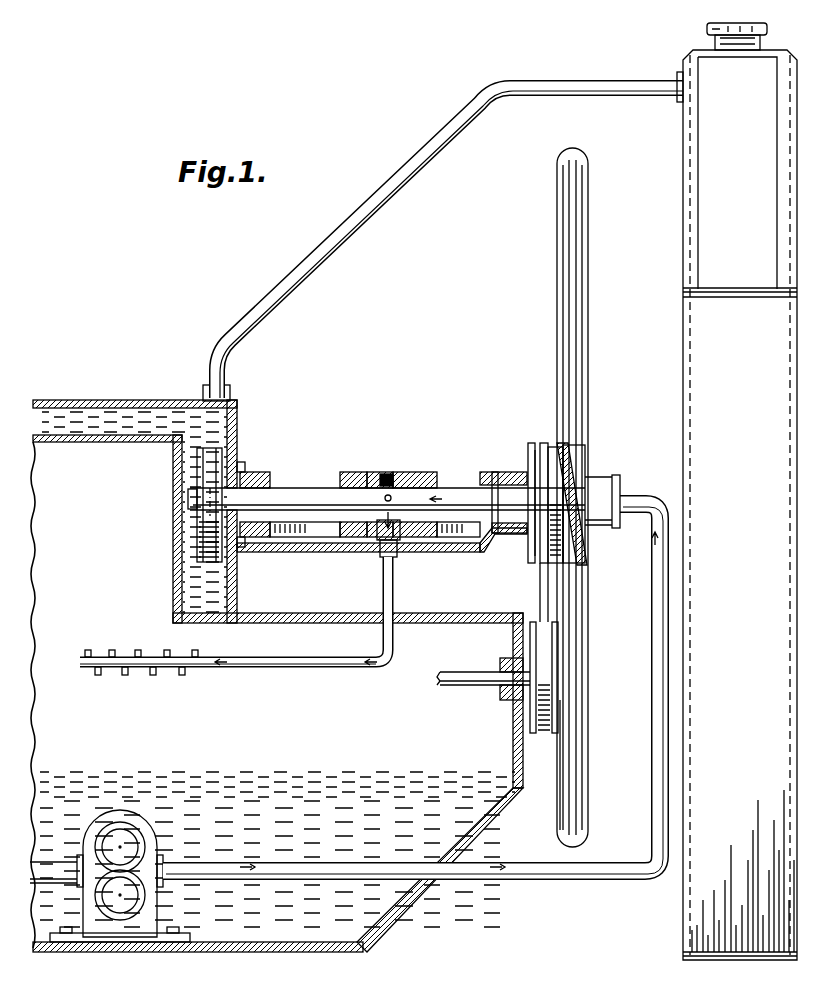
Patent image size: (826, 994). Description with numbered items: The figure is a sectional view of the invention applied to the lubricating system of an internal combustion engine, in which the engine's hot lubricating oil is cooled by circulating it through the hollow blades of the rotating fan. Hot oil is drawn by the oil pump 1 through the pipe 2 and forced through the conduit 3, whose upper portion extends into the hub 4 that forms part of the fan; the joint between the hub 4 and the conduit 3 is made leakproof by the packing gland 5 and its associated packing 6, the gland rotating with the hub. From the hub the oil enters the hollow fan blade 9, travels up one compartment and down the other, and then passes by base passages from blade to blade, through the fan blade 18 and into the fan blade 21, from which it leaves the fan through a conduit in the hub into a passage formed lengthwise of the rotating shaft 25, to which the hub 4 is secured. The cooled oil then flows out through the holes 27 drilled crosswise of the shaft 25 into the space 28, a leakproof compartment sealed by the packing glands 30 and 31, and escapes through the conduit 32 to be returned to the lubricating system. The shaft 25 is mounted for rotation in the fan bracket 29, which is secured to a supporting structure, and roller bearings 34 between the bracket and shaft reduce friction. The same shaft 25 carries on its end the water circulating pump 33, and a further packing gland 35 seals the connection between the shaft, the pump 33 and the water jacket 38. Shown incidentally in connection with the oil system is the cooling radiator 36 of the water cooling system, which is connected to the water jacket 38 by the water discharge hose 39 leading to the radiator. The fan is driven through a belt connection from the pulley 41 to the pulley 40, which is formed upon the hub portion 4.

The oil pump 1 is at (167, 850).
The pipe 2 is at (47, 880).
The conduit 3 is at (458, 880).
The hub 4 is at (584, 460).
The packing gland 5 is at (621, 478).
The packing 6 is at (603, 476).
The fan blade 9 is at (584, 331).
The fan blade 18 is at (586, 763).
The fan blade 21 is at (556, 442).
The rotating shaft 25 is at (308, 488).
The holes 27 is at (395, 472).
The space 28 is at (382, 545).
The fan bracket 29 is at (447, 559).
The packing gland 30 is at (438, 474).
The packing gland 31 is at (350, 472).
The conduit 32 is at (342, 665).
The water circulating pump 33 is at (205, 520).
The roller bearings 34 is at (500, 478).
The packing gland 35 is at (265, 472).
The cooling radiator 36 is at (740, 491).
The water jacket 38 is at (128, 412).
The water discharge hose 39 is at (349, 243).
The pulley 40 is at (530, 448).
The pulley 41 is at (535, 735).